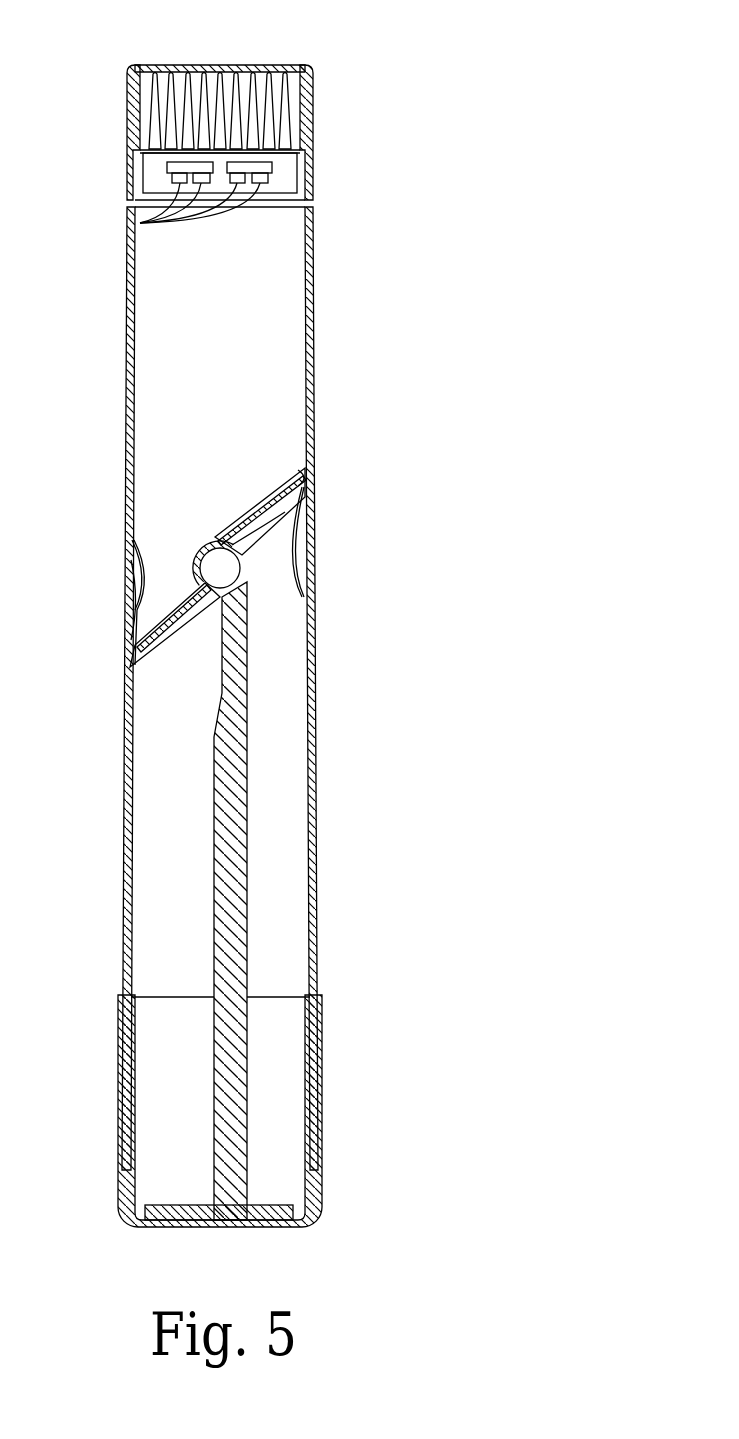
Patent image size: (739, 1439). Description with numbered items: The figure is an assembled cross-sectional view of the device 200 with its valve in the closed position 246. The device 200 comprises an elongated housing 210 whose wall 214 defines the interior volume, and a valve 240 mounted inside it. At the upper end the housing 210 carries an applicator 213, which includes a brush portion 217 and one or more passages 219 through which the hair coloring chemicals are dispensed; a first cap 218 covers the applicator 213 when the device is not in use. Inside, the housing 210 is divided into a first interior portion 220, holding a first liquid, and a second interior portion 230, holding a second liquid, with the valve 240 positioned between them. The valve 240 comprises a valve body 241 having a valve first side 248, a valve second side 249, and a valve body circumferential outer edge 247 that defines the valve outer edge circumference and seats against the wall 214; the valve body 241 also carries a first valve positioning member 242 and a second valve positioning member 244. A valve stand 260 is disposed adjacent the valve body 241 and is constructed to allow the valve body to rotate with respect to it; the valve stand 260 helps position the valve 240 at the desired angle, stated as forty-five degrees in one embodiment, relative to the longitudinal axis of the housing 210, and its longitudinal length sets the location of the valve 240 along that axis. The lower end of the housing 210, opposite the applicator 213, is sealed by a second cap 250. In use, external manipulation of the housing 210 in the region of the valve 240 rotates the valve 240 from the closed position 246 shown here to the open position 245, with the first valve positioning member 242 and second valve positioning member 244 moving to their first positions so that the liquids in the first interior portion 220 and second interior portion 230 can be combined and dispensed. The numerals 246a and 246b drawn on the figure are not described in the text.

The device 200 is at (328, 111).
The housing 210 is at (225, 688).
The applicator 213 is at (295, 177).
The wall 214 is at (130, 388).
The brush portion 217 is at (150, 118).
The first cap 218 is at (219, 64).
The passages 219 is at (140, 222).
The first interior portion 220 is at (234, 359).
The second interior portion 230 is at (196, 883).
The valve 240 is at (287, 485).
The valve body 241 is at (281, 505).
The first valve positioning member 242 is at (292, 583).
The second valve positioning member 244 is at (137, 540).
The open position 245 is at (187, 628).
The closed position 246 is at (236, 574).
The right leaf spring 246a is at (302, 570).
The left leaf spring 246b is at (135, 578).
The valve body circumferential outer edge 247 is at (165, 575).
The valve first side 248 is at (305, 480).
The valve second side 249 is at (175, 658).
The second cap 250 is at (211, 1228).
The valve stand 260 is at (247, 885).